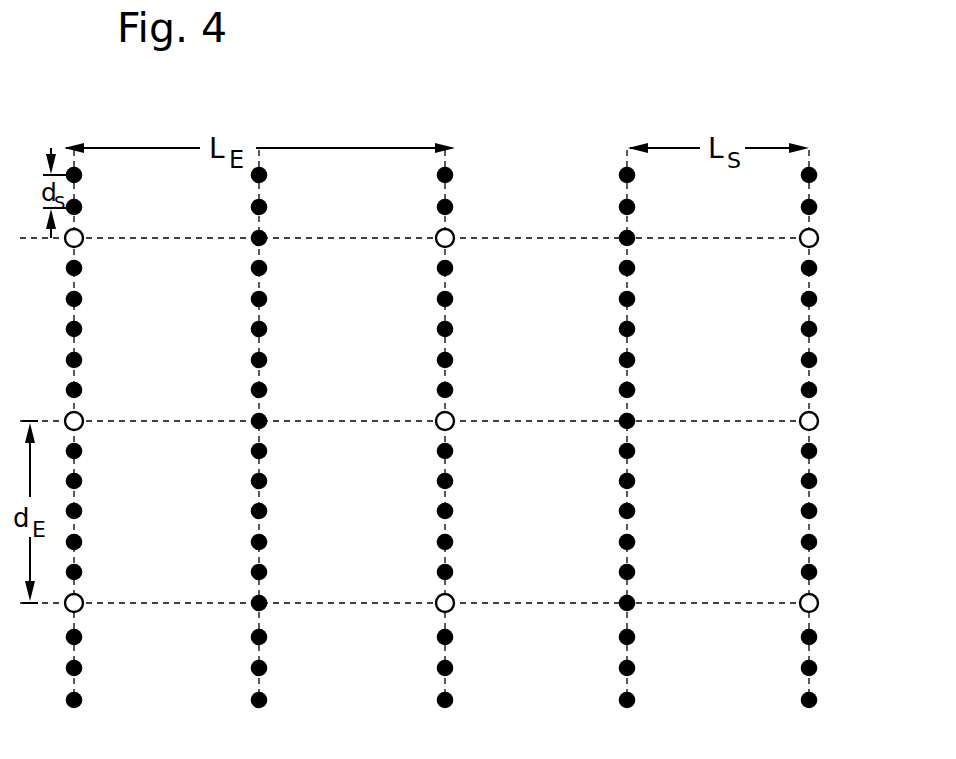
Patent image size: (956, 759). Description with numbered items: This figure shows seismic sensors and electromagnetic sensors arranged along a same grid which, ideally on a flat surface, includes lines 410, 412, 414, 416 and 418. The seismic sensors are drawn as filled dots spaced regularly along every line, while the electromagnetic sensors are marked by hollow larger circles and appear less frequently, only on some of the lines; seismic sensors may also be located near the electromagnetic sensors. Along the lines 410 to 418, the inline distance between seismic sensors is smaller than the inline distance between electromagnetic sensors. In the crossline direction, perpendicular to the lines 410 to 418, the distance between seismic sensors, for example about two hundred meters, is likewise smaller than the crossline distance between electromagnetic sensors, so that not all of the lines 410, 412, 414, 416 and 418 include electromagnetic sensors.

The line 410 is at (76, 684).
The line 412 is at (261, 684).
The line 414 is at (447, 684).
The line 416 is at (629, 684).
The line 418 is at (811, 684).